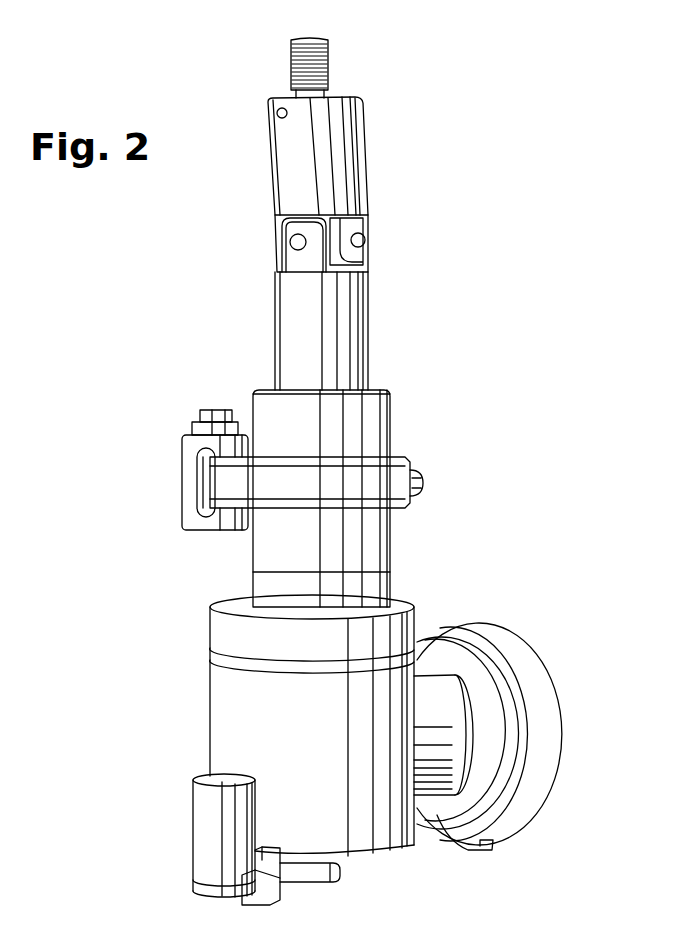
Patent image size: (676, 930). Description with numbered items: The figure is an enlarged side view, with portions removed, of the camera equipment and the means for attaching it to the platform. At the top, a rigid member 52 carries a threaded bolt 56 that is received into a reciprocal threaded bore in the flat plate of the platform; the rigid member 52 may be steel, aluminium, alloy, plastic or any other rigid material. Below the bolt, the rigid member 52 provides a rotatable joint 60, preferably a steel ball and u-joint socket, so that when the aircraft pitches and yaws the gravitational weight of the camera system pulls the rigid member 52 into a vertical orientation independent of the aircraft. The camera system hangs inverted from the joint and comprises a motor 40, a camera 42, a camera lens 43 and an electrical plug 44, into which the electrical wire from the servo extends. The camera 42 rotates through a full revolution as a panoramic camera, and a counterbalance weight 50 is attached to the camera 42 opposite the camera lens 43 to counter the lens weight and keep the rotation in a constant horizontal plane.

The threaded bolt 56 is at (330, 64).
The rigid member 52 is at (368, 148).
The rotatable joint 60 is at (375, 262).
The motor 40 is at (398, 426).
The electrical plug 44 is at (188, 443).
The camera 42 is at (463, 589).
The camera lens 43 is at (548, 720).
The counterbalance weight 50 is at (205, 815).